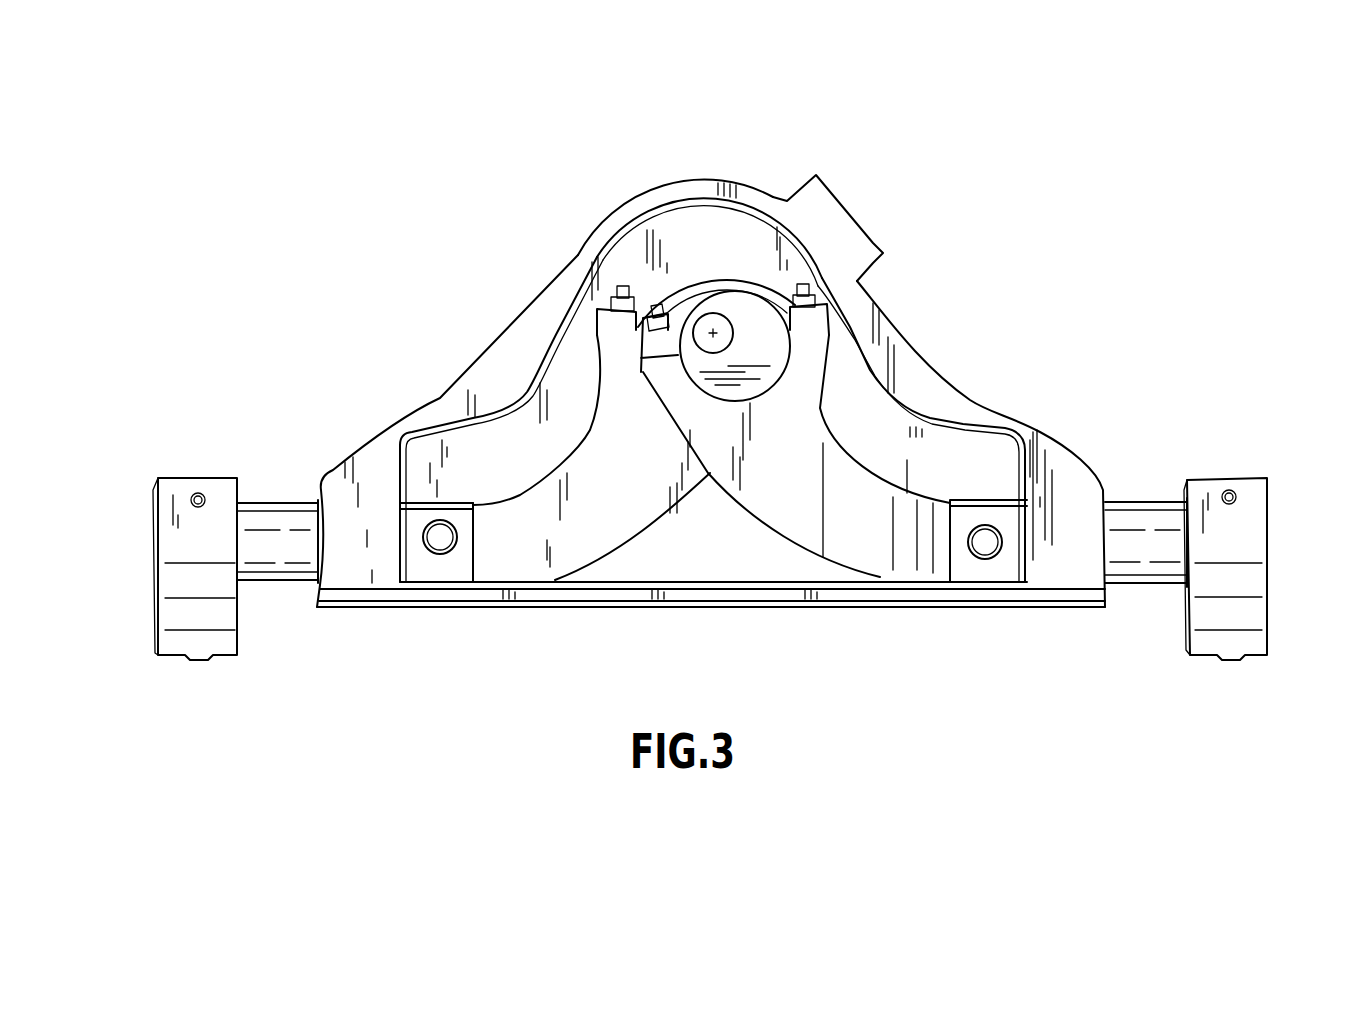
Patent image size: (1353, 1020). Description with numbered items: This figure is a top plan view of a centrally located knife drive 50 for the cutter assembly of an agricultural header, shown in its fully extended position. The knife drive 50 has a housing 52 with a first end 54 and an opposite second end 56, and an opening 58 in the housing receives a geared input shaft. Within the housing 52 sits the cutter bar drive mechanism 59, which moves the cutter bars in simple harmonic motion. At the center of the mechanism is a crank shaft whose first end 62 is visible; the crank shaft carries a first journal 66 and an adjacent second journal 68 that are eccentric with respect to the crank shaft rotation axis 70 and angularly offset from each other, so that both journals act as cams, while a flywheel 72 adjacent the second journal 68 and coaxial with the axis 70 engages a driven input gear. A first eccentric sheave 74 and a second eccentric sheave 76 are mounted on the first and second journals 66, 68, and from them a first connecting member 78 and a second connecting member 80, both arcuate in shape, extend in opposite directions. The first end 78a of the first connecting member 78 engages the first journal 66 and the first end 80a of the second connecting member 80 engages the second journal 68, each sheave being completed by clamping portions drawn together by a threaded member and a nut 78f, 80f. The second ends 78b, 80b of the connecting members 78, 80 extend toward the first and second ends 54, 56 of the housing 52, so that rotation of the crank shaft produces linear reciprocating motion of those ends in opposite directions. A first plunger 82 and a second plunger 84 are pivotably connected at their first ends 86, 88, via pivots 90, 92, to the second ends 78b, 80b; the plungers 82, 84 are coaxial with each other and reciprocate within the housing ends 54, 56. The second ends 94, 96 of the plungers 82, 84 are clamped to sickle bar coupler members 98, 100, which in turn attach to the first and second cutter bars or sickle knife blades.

The knife drive 50 is at (283, 142).
The housing 52 is at (533, 316).
The first end 54 is at (1067, 465).
The second end 56 is at (342, 487).
The opening 58 is at (838, 255).
The cutter bar drive mechanism 59 is at (684, 195).
The first end 62 is at (711, 333).
The first journal 66 is at (740, 328).
The second journal 68 is at (670, 307).
The crank shaft rotation axis 70 is at (727, 342).
The flywheel 72 is at (667, 225).
The first eccentric sheave 74 is at (795, 287).
The second eccentric sheave 76 is at (612, 287).
The first connecting member 78 is at (843, 450).
The first end of first connecting member 78a is at (812, 367).
The second end of first connecting member 78b is at (930, 510).
The nut 78f is at (818, 292).
The second connecting member 80 is at (577, 467).
The first end of second connecting member 80a is at (597, 312).
The second end of second connecting member 80b is at (480, 527).
The nut 80f is at (610, 303).
The first plunger 82 is at (1135, 573).
The second plunger 84 is at (290, 572).
The first end of first plunger 86 is at (1003, 573).
The first end of second plunger 88 is at (410, 573).
The pivot 90 is at (980, 547).
The pivot 92 is at (443, 550).
The second end of first plunger 94 is at (1160, 505).
The second end of second plunger 96 is at (267, 520).
The sickle bar coupler member 98 is at (1255, 530).
The sickle bar coupler member 100 is at (200, 552).